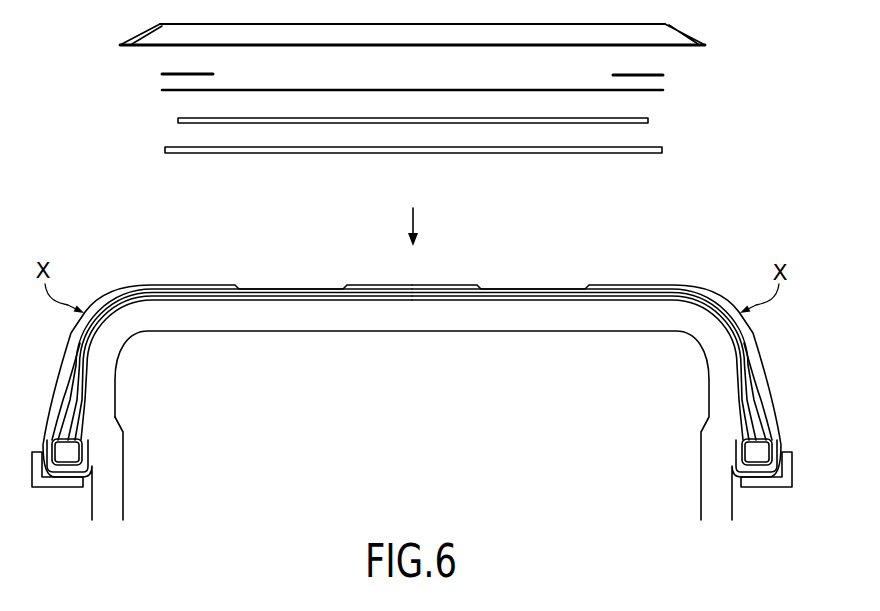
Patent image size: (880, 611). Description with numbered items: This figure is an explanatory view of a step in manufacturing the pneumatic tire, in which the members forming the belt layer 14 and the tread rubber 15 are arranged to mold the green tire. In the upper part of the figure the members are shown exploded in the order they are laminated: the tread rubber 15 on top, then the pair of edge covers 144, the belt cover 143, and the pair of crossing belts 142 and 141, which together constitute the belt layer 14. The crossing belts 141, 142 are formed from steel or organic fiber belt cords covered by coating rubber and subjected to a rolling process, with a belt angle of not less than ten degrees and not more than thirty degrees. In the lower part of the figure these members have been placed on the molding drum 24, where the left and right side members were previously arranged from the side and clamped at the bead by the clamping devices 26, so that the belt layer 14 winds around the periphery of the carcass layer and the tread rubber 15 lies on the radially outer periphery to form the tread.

The tread rubber 15 is at (688, 35).
The belt layer 14 is at (489, 114).
The edge cover 144 is at (663, 76).
The belt cover 143 is at (663, 91).
The crossing belt 142 is at (648, 121).
The crossing belt 141 is at (459, 152).
The molding drum 24 is at (417, 334).
The clamping device 26 is at (53, 488).